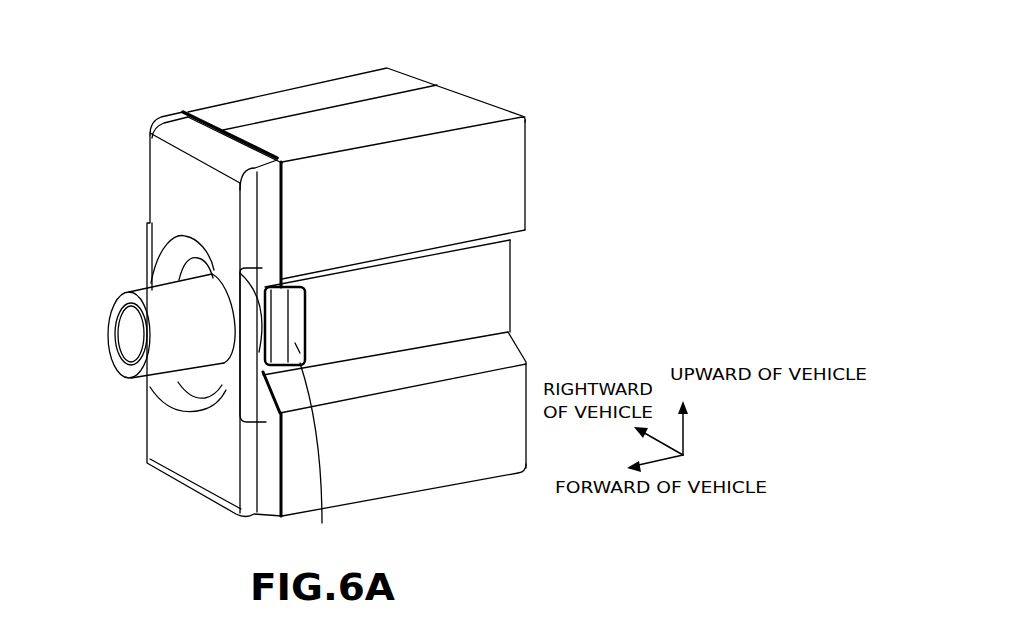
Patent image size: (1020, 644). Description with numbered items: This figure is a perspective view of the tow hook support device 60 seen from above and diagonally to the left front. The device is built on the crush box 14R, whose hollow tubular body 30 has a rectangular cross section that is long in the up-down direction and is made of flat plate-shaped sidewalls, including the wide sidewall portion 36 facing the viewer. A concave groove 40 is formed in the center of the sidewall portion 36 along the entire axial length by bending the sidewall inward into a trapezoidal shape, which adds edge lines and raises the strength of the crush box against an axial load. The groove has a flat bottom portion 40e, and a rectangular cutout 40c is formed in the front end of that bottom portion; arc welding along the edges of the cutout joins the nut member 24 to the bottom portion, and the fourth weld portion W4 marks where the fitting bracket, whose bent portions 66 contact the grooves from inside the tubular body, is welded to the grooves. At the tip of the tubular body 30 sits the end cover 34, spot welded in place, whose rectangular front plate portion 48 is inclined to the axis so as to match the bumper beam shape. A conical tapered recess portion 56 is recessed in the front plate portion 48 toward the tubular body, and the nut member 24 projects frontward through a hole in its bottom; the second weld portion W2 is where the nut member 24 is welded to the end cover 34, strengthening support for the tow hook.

The crush box 14R is at (458, 48).
The tubular body 30 is at (266, 70).
The tow hook support device 60 is at (97, 150).
The nut member 24 is at (151, 286).
The cutout 40c is at (280, 355).
The fourth weld portion W4 is at (306, 318).
The second weld portion W2 is at (212, 278).
The bottom portion 40e is at (481, 286).
The concave groove 40 is at (502, 354).
The tapered recess portion 56 is at (152, 386).
The end cover 34 is at (118, 442).
The front plate portion 48 is at (192, 463).
The bent portion 66 is at (316, 457).
The sidewall portion 36 is at (435, 466).